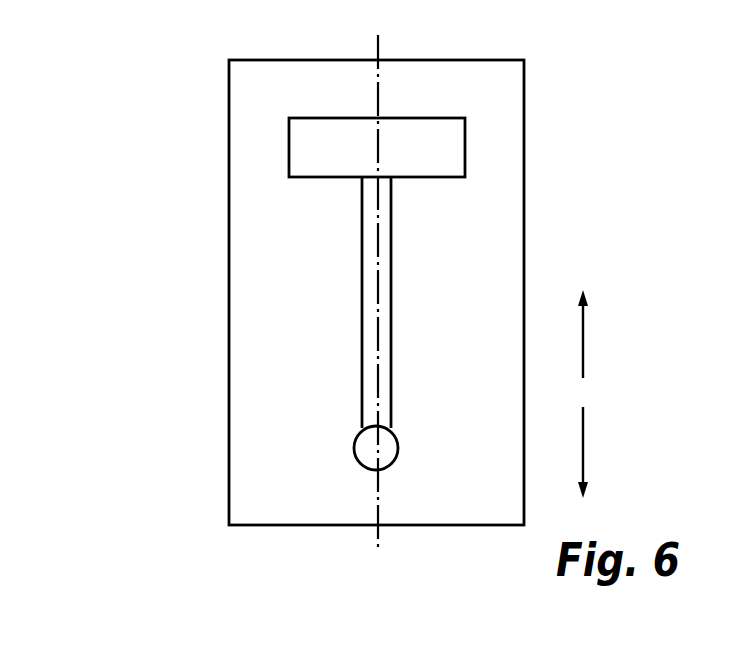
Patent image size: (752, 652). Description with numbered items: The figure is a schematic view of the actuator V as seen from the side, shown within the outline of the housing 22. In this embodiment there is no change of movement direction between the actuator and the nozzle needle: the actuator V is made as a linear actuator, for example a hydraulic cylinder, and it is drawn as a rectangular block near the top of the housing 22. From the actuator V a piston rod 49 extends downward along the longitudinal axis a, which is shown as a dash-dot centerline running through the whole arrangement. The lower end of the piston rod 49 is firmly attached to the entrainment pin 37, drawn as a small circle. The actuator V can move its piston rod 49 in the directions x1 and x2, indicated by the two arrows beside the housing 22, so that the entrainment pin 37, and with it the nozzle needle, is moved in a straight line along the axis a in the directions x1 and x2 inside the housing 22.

The housing 22 is at (228, 104).
The actuator V is at (300, 154).
The piston rod 49 is at (362, 246).
The entrainment pin 37 is at (356, 448).
The longitudinal axis a is at (376, 52).
The direction x1 is at (614, 457).
The direction x2 is at (613, 329).